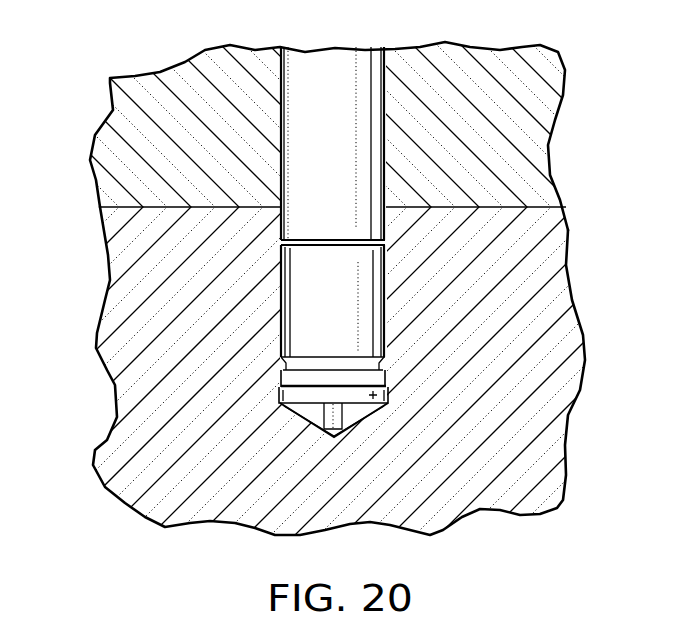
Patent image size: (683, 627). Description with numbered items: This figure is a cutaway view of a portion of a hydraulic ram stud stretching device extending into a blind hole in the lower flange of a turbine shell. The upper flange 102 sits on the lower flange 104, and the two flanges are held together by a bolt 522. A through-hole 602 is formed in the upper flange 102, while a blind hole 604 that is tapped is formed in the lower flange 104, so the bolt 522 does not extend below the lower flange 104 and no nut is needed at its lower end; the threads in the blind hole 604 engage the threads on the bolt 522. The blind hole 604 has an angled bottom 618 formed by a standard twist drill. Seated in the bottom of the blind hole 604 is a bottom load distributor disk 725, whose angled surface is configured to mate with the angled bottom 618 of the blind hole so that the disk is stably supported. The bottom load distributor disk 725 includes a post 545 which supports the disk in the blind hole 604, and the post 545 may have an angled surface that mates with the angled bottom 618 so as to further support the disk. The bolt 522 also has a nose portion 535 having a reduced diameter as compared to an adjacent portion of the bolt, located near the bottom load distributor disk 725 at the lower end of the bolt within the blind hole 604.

The upper flange 102 is at (538, 100).
The lower flange 104 is at (567, 343).
The bolt 522 is at (332, 67).
The through-hole 602 is at (280, 107).
The blind hole 604 is at (387, 375).
The nose portion 535 is at (282, 383).
The bottom load distributor disk 725 is at (388, 396).
The angled bottom 618 is at (360, 421).
The post 545 is at (323, 430).